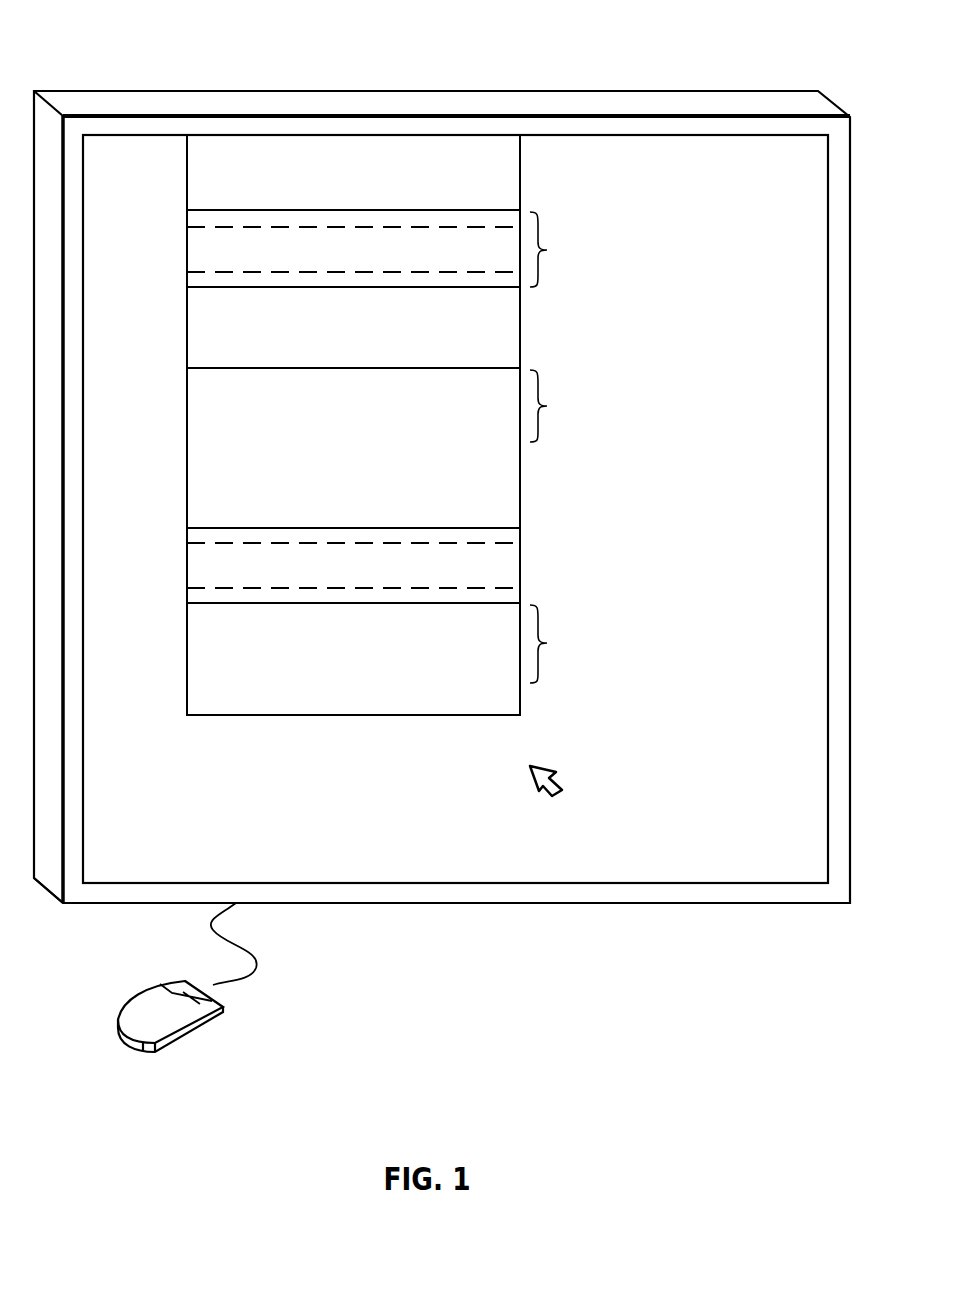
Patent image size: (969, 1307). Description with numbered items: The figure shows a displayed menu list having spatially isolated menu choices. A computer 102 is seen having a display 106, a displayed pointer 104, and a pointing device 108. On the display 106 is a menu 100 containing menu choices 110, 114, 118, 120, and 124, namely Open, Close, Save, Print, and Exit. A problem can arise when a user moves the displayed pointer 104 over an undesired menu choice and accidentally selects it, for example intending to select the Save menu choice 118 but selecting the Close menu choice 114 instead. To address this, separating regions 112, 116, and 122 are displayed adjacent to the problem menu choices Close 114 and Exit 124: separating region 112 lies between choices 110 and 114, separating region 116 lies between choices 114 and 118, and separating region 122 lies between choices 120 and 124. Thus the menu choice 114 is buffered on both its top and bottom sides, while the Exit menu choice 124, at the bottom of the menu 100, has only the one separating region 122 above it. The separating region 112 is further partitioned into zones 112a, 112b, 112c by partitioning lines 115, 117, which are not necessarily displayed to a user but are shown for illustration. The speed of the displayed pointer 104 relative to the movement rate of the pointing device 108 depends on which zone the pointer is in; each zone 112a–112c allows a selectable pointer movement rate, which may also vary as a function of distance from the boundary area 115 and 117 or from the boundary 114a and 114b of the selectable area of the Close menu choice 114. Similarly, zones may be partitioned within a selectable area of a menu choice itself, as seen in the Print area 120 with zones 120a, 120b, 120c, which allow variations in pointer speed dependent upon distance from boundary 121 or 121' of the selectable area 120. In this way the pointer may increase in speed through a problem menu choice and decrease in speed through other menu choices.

The menu 100 is at (447, 131).
The computer 102 is at (173, 87).
The displayed pointer 104 is at (563, 802).
The display 106 is at (762, 862).
The pointing device 108 is at (215, 1029).
The menu choice 110 is at (211, 165).
The separating region 112 is at (548, 251).
The zone 112a is at (490, 217).
The zone 112b is at (422, 244).
The zone 112c is at (402, 281).
The menu choice 114 is at (211, 327).
The boundary 114a is at (491, 296).
The boundary 114b is at (491, 378).
The partitioning line 115 is at (186, 227).
The separating region 116 is at (548, 408).
The partitioning line 117 is at (186, 272).
The menu choice 118 is at (211, 460).
The menu choice 120 is at (211, 568).
The zone 120a is at (490, 539).
The zone 120b is at (447, 569).
The zone 120c is at (224, 593).
The boundary 121 is at (205, 504).
The boundary 121' is at (320, 626).
The separating region 122 is at (548, 644).
The menu choice 124 is at (211, 687).